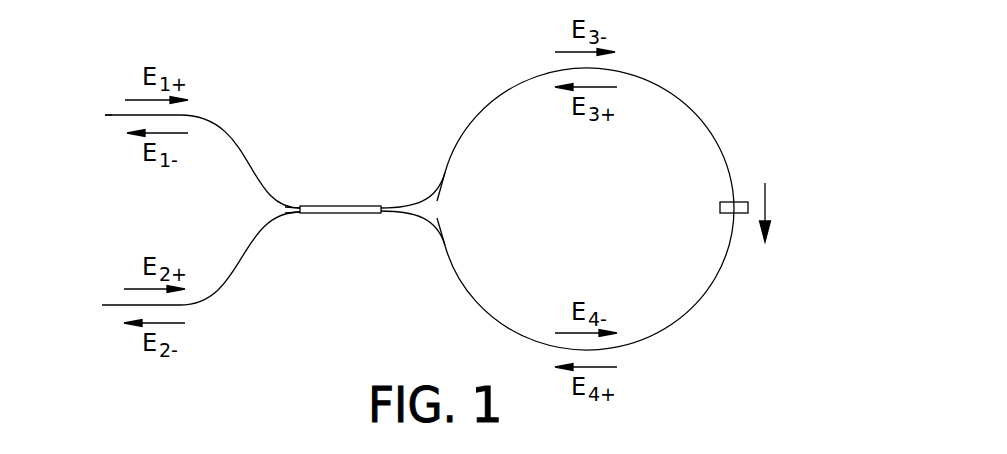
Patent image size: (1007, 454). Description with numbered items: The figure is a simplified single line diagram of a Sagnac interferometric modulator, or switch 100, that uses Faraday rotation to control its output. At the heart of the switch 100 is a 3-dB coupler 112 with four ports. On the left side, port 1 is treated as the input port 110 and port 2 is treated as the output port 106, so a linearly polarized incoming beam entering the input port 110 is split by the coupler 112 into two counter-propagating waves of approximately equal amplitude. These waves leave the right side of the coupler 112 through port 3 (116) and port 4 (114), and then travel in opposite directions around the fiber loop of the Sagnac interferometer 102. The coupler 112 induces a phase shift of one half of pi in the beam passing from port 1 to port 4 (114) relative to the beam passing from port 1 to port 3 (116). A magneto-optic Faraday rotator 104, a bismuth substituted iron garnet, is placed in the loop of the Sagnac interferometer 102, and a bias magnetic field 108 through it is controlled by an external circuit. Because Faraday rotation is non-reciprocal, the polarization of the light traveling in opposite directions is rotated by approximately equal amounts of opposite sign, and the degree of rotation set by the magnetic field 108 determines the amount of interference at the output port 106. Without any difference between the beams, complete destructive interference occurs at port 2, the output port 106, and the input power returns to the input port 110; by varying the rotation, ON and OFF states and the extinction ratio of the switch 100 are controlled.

The switch 100 is at (88, 190).
The Sagnac interferometer 102 is at (470, 128).
The magneto-optic Faraday rotator 104 is at (738, 214).
The output port 106 is at (186, 258).
The magnetic field 108 is at (767, 194).
The input port 110 is at (192, 119).
The 3-dB coupler 112 is at (355, 203).
The port 4 114 is at (408, 262).
The port 3 116 is at (457, 192).
The port 1 is at (283, 186).
The port 2 is at (278, 238).
The port 3 is at (429, 183).
The port 4 is at (433, 240).